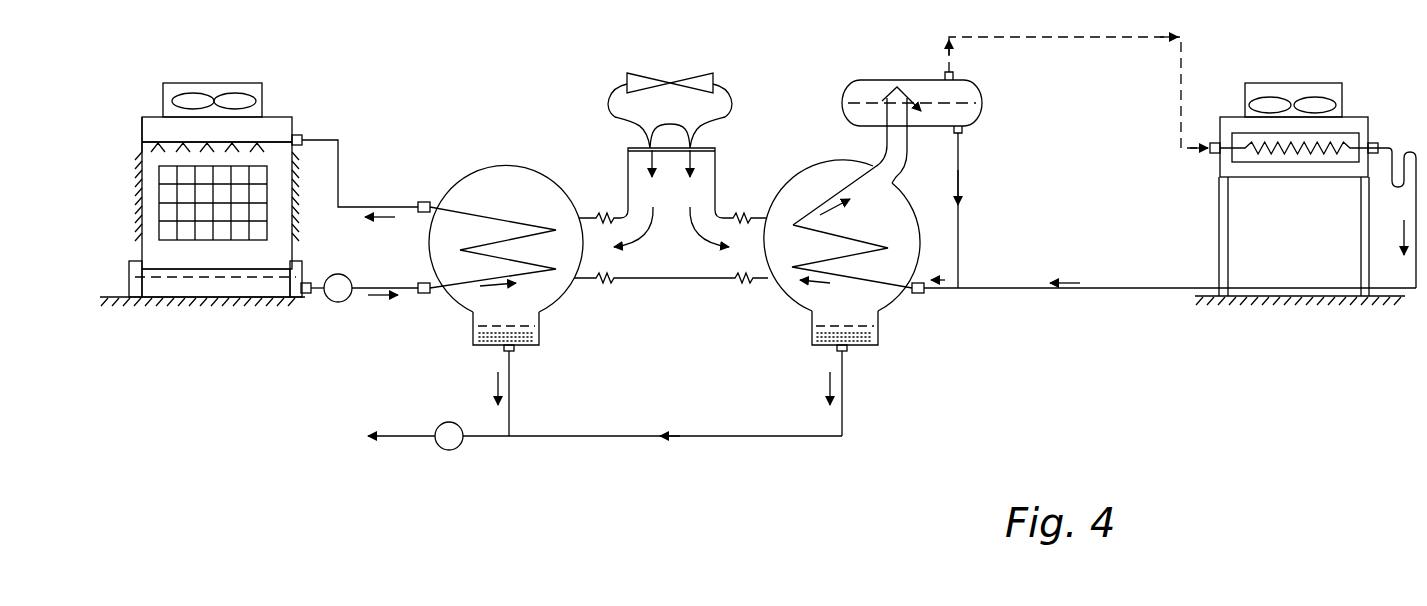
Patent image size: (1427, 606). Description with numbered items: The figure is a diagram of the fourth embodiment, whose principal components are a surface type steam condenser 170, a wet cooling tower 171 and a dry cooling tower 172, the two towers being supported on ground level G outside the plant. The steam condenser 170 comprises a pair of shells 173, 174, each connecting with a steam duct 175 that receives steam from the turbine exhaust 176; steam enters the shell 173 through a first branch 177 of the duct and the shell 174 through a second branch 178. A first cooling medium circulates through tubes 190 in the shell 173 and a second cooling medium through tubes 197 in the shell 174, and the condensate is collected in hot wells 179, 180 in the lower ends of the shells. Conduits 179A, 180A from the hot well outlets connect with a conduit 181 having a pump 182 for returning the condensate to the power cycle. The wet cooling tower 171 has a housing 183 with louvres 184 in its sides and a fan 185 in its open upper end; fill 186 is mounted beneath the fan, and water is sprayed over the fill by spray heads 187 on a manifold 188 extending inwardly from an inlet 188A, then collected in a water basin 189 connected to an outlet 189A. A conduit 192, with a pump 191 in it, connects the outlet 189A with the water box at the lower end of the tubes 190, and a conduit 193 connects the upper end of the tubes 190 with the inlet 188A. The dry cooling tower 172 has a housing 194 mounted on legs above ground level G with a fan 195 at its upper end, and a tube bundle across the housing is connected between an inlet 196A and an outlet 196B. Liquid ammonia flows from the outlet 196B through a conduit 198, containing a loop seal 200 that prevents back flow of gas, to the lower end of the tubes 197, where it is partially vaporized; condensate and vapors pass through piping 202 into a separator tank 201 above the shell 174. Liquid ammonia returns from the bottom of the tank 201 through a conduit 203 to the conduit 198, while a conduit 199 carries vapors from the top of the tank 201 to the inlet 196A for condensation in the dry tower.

The steam condenser 170 is at (668, 283).
The wet cooling tower 171 is at (281, 112).
The dry cooling tower 172 is at (1213, 178).
The shell 173 is at (459, 312).
The shell 174 is at (794, 315).
The steam duct 175 is at (626, 165).
The turbine exhaust 176 is at (712, 78).
The first branch 177 is at (608, 284).
The second branch 178 is at (745, 284).
The hot well 179 is at (473, 343).
The conduit 179A is at (511, 380).
The hot well 180 is at (877, 343).
The conduit 180A is at (846, 412).
The conduit 181 is at (406, 441).
The pump 182 is at (450, 422).
The housing 183 is at (143, 143).
The louvres 184 is at (293, 222).
The fan 185 is at (241, 83).
The fill 186 is at (170, 208).
The spray heads 187 is at (182, 153).
The manifold 188 is at (170, 140).
The inlet 188A is at (300, 133).
The water basin 189 is at (271, 269).
The outlet 189A is at (306, 298).
The tubes 190 is at (466, 212).
The pump 191 is at (335, 274).
The conduit 192 is at (376, 286).
The conduit 193 is at (340, 143).
The housing 194 is at (1351, 116).
The fan 195 is at (1268, 88).
The inlet 196A is at (1212, 155).
The outlet 196B is at (1374, 143).
The tubes 197 is at (848, 238).
The conduit 198 is at (1000, 289).
The conduit 199 is at (1089, 37).
The loop seal 200 is at (1398, 188).
The separator tank 201 is at (985, 89).
The piping 202 is at (904, 162).
The conduit 203 is at (960, 228).
The ground level G is at (116, 297).